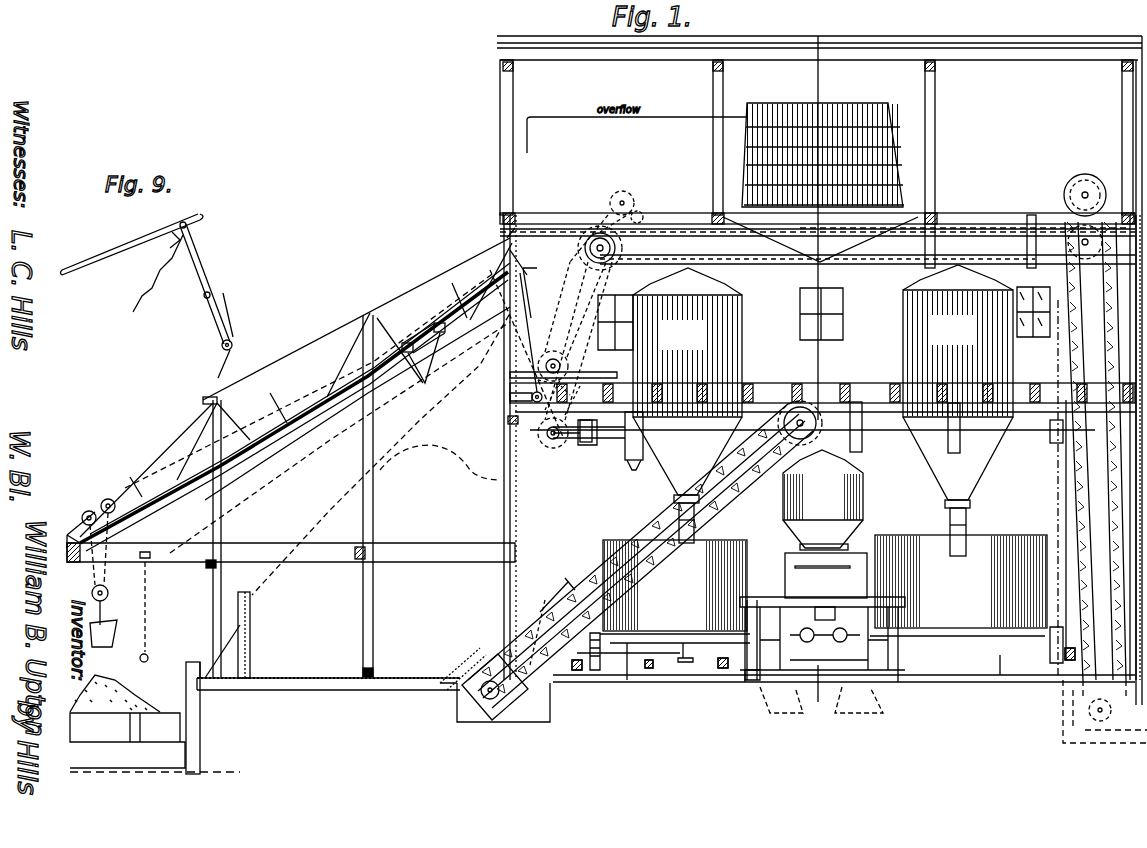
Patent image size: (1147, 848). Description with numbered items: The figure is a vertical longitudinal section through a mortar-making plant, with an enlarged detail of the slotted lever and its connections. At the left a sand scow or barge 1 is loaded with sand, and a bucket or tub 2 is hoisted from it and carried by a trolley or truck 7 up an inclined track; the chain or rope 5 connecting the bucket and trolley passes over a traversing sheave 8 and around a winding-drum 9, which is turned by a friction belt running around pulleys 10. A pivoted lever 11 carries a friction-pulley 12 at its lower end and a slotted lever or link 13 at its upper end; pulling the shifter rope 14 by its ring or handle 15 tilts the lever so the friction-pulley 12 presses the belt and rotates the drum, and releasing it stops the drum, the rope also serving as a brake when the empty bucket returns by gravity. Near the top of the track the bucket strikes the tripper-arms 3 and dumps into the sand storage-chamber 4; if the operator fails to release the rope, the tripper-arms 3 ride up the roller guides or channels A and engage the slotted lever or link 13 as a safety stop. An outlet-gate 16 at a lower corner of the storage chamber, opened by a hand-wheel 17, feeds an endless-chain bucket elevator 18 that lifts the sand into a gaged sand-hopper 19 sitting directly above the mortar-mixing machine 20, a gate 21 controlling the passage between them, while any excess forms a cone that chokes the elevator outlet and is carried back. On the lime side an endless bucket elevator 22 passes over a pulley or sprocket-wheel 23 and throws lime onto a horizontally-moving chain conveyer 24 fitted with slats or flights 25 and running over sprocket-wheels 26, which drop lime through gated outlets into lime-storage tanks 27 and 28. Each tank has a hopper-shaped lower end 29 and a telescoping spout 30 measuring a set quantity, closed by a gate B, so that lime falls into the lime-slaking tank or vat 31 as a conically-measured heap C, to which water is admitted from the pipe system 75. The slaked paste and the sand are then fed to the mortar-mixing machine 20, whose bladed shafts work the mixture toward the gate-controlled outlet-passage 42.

In FIG. 1, the sand scow or barge 1 is at (155, 723).
In FIG. 1, the bucket or tub 2 is at (108, 633).
In FIG. 1, the tripper-arms 3 is at (821, 365).
In FIG. 1, the storage-chamber 4 is at (295, 535).
In FIG. 1, the chain or rope 5 is at (291, 452).
In FIG. 1, the trolley or truck 7 is at (98, 505).
In FIG. 1, the traversing sheave 8 is at (626, 196).
In FIG. 1, the winding-drum 9 is at (551, 358).
In FIG. 1, the pulleys 10 is at (560, 462).
In FIG. 1, the pivoted lever 11 is at (530, 330).
In FIG. 9, the pivoted lever 11 is at (206, 301).
In FIG. 1, the friction-pulley 12 is at (510, 396).
In FIG. 1, the slotted lever or link 13 is at (522, 307).
In FIG. 9, the slotted lever or link 13 is at (132, 240).
In FIG. 1, the pull or shifter rope 14 is at (340, 455).
In FIG. 9, the pull or shifter rope 14 is at (143, 273).
In FIG. 1, the ring or handle 15 is at (153, 609).
In FIG. 1, the outlet-gate 16 is at (462, 675).
In FIG. 1, the hand-wheel 17 is at (552, 617).
In FIG. 1, the endless-chain bucket elevator 18 is at (642, 560).
In FIG. 1, the sand-hopper 19 is at (823, 485).
In FIG. 1, the mortar-mixing machine 20 is at (826, 575).
In FIG. 1, the gate 21 is at (823, 537).
In FIG. 1, the endless bucket elevator 22 is at (1136, 226).
In FIG. 1, the pulley or sprocket-wheel 23 is at (1080, 180).
In FIG. 1, the endless horizontally-moving chain conveyer 24 is at (970, 245).
In FIG. 1, the slats or flights 25 is at (975, 215).
In FIG. 1, the pulleys or sprocket-wheels 26 is at (585, 250).
In FIG. 1, the lime-storage tank 27 is at (958, 341).
In FIG. 1, the lime-storage tank 28 is at (687, 342).
In FIG. 1, the hopper-shaped lower end 29 is at (823, 458).
In FIG. 1, the telescoping connection or spout 30 is at (679, 518).
In FIG. 1, the lime-slaking tank or vat 31 is at (823, 589).
In FIG. 1, the gate-controlled outlet-passage 42 is at (830, 608).
In FIG. 1, the pipe system 75 is at (830, 385).
In FIG. 1, the roller guides or channels A is at (423, 345).
In FIG. 1, the gate B is at (674, 498).
In FIG. 9, the gate B is at (168, 242).
In FIG. 9, the conically-measured heap C is at (202, 218).